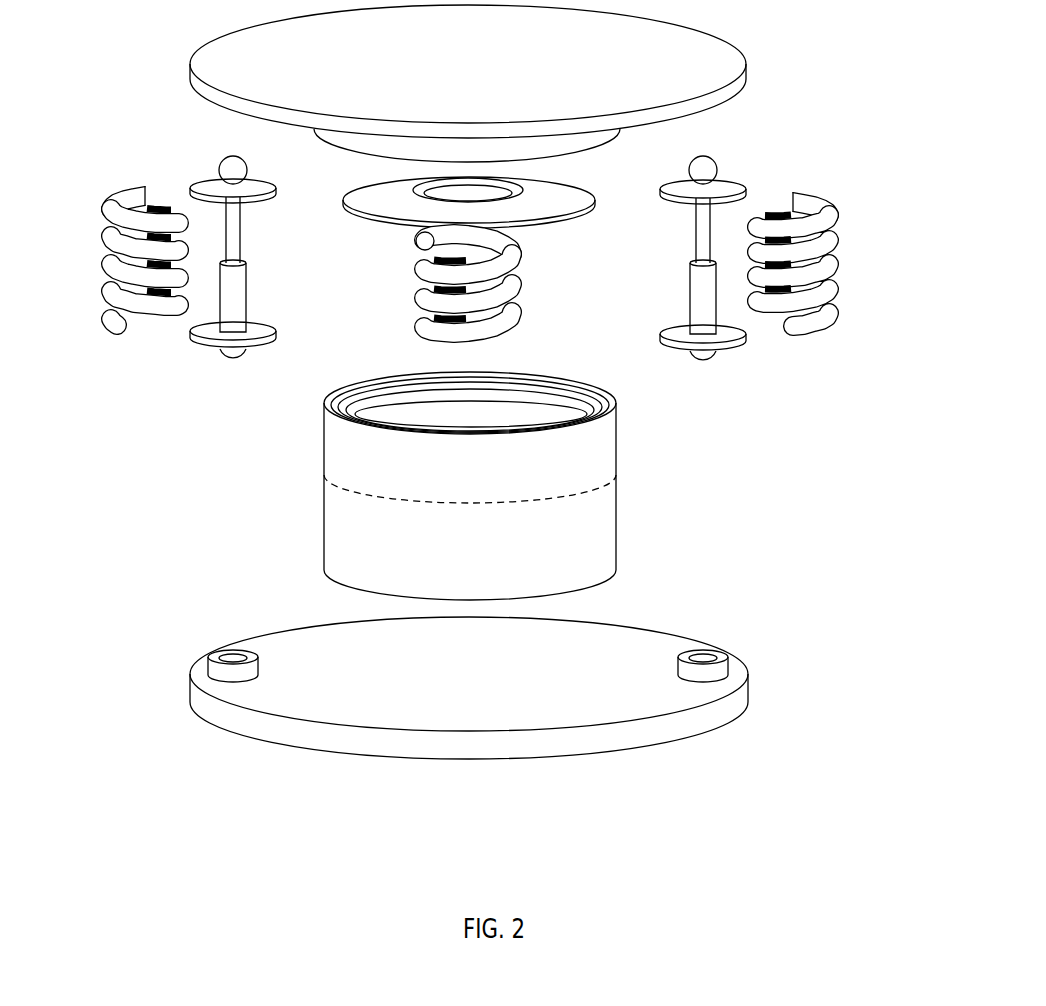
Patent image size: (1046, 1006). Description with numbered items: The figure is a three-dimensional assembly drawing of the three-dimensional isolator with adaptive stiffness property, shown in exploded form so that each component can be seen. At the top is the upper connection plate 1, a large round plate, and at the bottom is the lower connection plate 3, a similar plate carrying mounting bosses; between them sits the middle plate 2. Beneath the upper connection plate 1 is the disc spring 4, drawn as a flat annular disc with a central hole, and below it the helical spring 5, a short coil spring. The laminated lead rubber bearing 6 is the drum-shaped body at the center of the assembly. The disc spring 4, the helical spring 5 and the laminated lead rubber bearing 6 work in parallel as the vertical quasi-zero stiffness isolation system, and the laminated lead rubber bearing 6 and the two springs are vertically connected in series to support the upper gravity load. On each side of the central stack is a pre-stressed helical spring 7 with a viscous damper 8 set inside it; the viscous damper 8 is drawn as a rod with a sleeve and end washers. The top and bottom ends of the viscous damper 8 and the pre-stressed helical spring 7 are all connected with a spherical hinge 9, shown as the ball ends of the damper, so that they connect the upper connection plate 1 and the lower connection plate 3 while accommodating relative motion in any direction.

The upper connection plate 1 is at (753, 70).
The middle plate 2 is at (620, 440).
The lower connection plate 3 is at (633, 623).
The disc spring 4 is at (573, 225).
The helical spring 5 is at (520, 300).
The laminated lead rubber bearing 6 is at (620, 527).
The pre-stressed helical spring 7 is at (810, 188).
The viscous damper 8 is at (725, 297).
The spherical hinge 9 is at (715, 363).